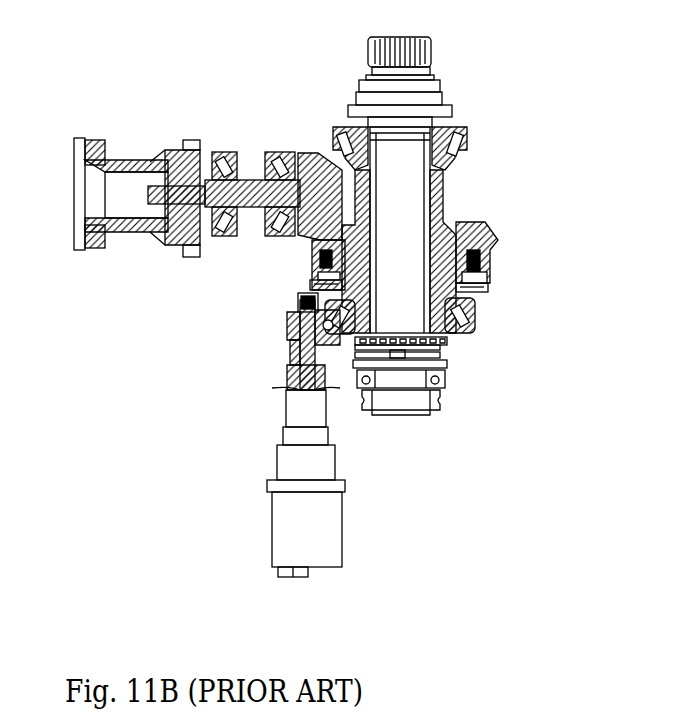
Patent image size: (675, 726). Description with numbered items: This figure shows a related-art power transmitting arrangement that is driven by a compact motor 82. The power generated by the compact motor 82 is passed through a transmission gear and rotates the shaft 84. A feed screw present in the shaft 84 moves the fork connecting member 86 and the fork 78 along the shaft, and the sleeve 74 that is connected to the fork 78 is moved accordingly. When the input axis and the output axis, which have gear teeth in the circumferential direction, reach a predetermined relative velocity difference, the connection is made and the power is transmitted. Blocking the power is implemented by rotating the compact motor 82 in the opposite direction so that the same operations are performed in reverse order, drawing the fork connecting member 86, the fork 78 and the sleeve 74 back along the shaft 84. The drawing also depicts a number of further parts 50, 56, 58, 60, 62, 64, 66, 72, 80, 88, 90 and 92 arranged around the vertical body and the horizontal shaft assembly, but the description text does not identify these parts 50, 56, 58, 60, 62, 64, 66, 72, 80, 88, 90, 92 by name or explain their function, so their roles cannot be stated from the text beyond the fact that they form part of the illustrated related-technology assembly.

The prior art valve assembly 50 is at (131, 146).
The actuator 56 is at (351, 529).
The stem housing 58 is at (430, 71).
The shaft 60 is at (247, 213).
The housing block 62 is at (318, 152).
The valve body 64 is at (448, 160).
The collar 66 is at (483, 226).
The bearing 72 is at (460, 325).
The sleeve 74 is at (448, 362).
The fork 78 is at (402, 353).
The washer 80 is at (447, 341).
The compact motor 82 is at (277, 526).
The shaft 84 is at (290, 335).
The fork connecting member 86 is at (288, 355).
The seal 88 is at (298, 297).
The knob 90 is at (368, 52).
The seal plate 92 is at (489, 289).